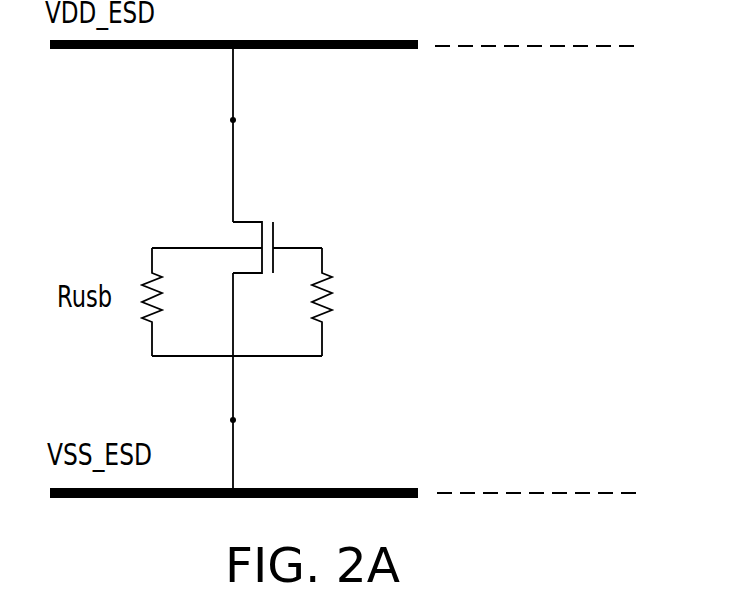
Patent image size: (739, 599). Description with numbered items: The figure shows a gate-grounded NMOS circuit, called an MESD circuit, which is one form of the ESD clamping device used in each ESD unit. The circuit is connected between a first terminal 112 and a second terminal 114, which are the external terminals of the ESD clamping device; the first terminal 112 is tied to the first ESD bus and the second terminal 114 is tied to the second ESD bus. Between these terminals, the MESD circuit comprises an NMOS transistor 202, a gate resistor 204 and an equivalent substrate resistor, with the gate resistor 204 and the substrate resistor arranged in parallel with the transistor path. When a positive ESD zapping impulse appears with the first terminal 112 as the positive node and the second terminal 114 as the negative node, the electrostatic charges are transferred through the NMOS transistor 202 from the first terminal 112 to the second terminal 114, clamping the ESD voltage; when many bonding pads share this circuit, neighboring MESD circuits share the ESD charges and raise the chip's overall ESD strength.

The first terminal 112 is at (236, 120).
The second terminal 114 is at (236, 420).
The NMOS transistor 202 is at (268, 213).
The gate resistor 204 is at (324, 302).